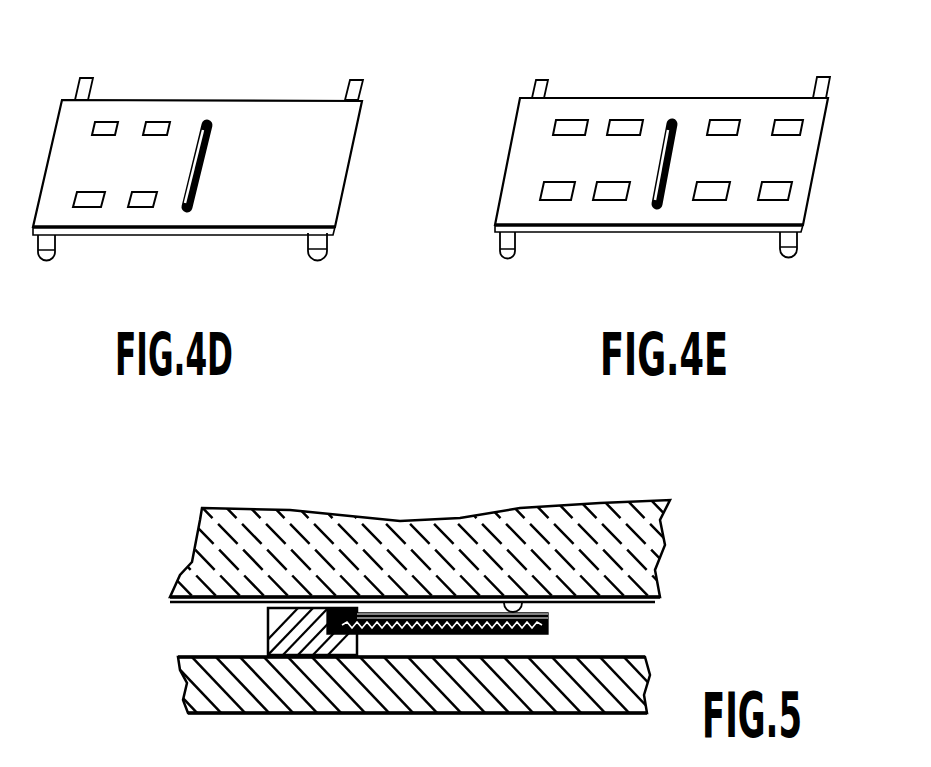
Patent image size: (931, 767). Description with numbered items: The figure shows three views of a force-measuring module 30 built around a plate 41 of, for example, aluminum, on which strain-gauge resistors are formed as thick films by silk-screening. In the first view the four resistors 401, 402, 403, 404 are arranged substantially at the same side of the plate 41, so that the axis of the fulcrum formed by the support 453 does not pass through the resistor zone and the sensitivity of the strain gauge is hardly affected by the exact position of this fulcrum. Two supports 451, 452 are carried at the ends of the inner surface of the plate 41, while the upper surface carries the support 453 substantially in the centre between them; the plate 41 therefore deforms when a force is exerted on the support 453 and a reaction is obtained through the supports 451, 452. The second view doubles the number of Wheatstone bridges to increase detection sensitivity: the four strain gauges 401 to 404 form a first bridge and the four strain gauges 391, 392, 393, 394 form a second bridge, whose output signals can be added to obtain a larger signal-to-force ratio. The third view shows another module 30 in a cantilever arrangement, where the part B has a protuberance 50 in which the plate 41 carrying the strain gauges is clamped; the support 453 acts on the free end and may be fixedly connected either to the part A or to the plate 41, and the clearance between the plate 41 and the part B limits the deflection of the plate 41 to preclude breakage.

In FIG. 4D, the module 30 is at (362, 168).
In FIG. 4E, the module 30 is at (496, 151).
In FIG. 5, the module 30 is at (410, 522).
In FIG. 4D, the resistor 401 is at (82, 197).
In FIG. 4E, the resistor 401 is at (553, 193).
In FIG. 4D, the resistor 402 is at (106, 128).
In FIG. 4E, the resistor 402 is at (567, 127).
In FIG. 4D, the resistor 403 is at (156, 128).
In FIG. 4E, the resistor 403 is at (622, 127).
In FIG. 4D, the resistor 404 is at (143, 198).
In FIG. 4E, the resistor 404 is at (608, 190).
In FIG. 4E, the strain gauge 391 is at (710, 192).
In FIG. 4E, the strain gauge 392 is at (729, 128).
In FIG. 4E, the strain gauge 393 is at (791, 128).
In FIG. 4E, the strain gauge 394 is at (775, 192).
In FIG. 4D, the support 451 is at (46, 260).
In FIG. 4E, the support 451 is at (507, 258).
In FIG. 4D, the support 452 is at (317, 258).
In FIG. 4E, the support 452 is at (790, 257).
In FIG. 4D, the support 453 is at (208, 147).
In FIG. 4E, the support 453 is at (672, 118).
In FIG. 5, the support 453 is at (600, 603).
In FIG. 5, the plate 41 is at (548, 627).
In FIG. 5, the protuberance 50 is at (268, 632).
In FIG. 5, the part A is at (190, 578).
In FIG. 5, the part B is at (203, 687).